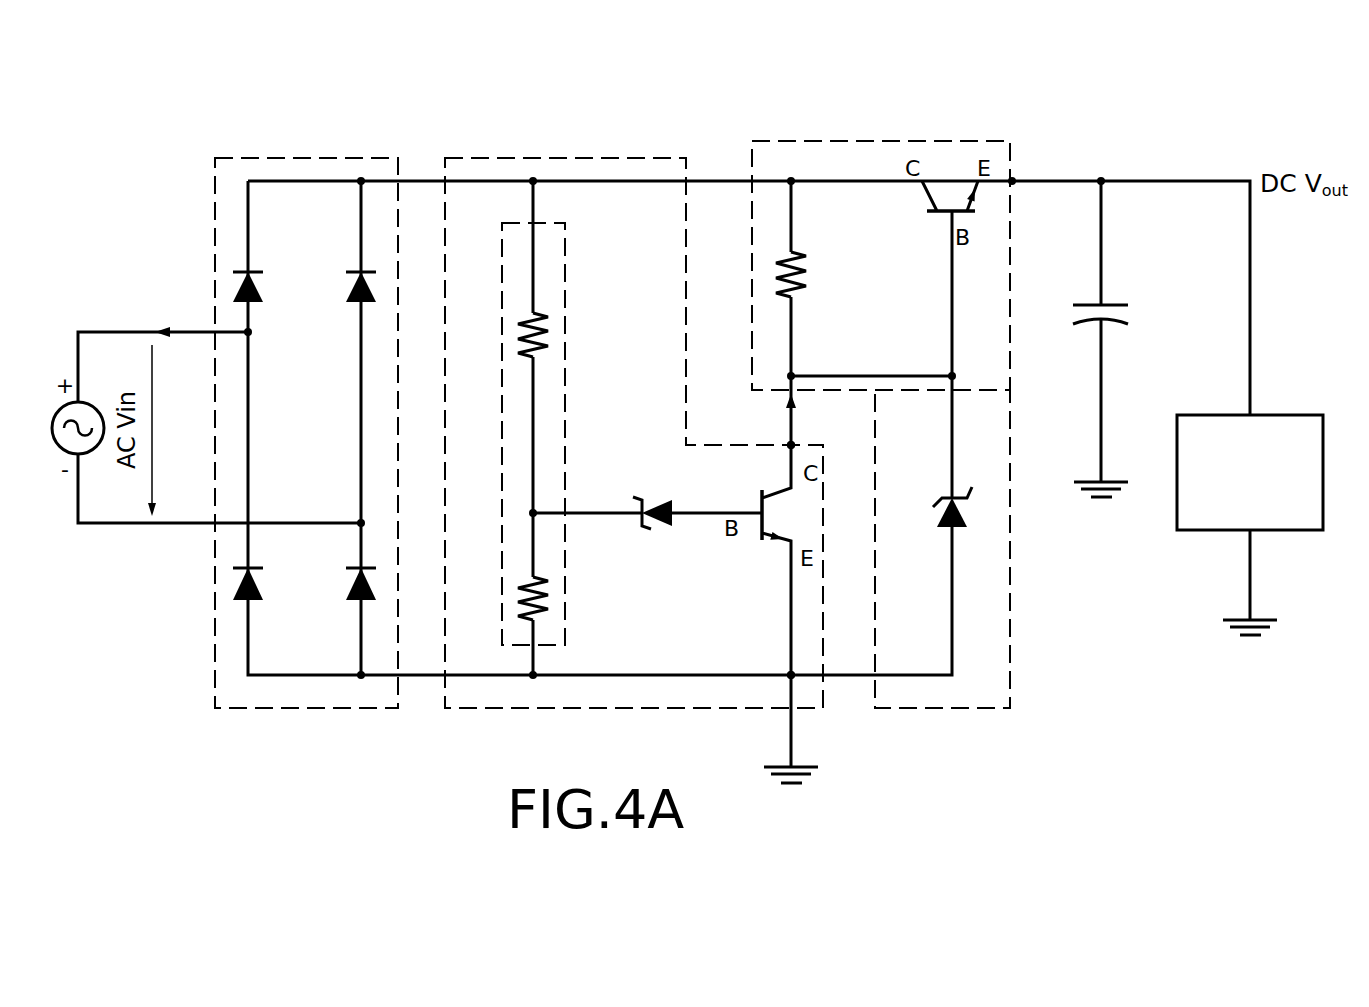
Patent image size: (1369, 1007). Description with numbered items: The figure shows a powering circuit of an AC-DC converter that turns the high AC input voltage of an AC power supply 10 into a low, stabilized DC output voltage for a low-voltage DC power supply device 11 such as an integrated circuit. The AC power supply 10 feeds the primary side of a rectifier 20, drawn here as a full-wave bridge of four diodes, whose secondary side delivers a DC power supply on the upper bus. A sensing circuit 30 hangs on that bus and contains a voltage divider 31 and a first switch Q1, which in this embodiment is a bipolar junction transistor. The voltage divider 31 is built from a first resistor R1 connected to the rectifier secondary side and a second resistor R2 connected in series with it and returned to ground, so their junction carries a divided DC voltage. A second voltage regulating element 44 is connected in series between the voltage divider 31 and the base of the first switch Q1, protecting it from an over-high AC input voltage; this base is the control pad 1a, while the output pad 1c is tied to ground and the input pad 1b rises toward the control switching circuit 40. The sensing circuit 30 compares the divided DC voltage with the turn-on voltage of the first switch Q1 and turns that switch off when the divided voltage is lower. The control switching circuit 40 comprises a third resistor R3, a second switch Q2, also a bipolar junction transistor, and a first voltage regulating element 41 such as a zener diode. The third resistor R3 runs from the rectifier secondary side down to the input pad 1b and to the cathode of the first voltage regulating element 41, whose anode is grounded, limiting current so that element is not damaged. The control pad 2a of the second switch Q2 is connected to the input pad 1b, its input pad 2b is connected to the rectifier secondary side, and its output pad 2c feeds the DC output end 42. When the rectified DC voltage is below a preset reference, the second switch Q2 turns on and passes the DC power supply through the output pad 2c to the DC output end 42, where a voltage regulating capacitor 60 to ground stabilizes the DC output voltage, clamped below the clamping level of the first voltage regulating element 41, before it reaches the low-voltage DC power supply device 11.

The AC power supply 10 is at (50, 460).
The rectifier 20 is at (360, 156).
The sensing circuit 30 is at (586, 155).
The voltage divider 31 is at (500, 234).
The first resistor R1 is at (557, 338).
The second resistor R2 is at (555, 600).
The third resistor R3 is at (812, 275).
The first switch Q1 is at (742, 494).
The second switch Q2 is at (965, 170).
The second voltage regulating element 44 is at (658, 533).
The first voltage regulating element 41 is at (930, 535).
The control switching circuit 40 is at (1022, 547).
The low-voltage DC output end 42 is at (1101, 181).
The voltage regulating capacitor 60 is at (1138, 313).
The low-voltage DC power supply device 11 is at (1273, 500).
The control pad 1a is at (530, 513).
The input pad 1b is at (794, 440).
The output pad 1c is at (788, 677).
The control pad 2a is at (955, 377).
The input pad 2b is at (790, 180).
The output pad 2c is at (1014, 183).